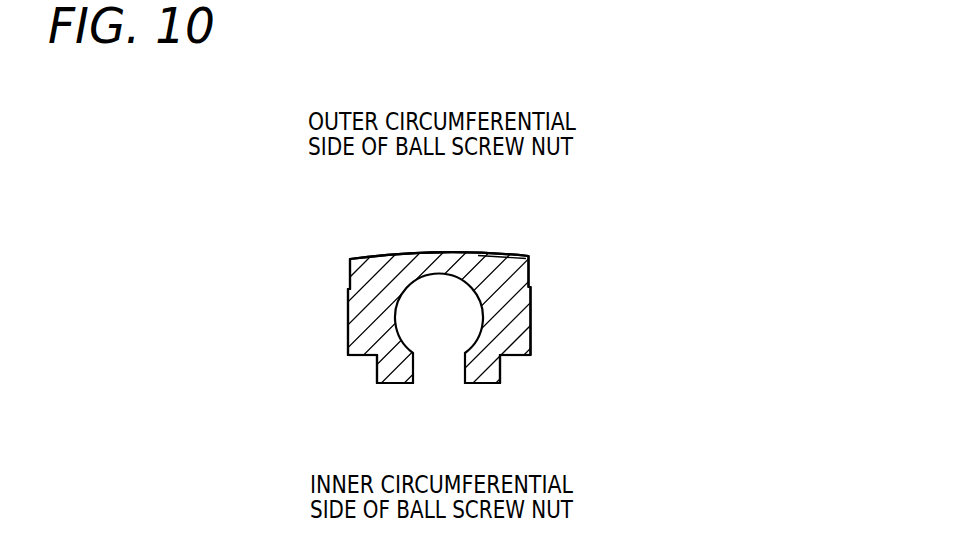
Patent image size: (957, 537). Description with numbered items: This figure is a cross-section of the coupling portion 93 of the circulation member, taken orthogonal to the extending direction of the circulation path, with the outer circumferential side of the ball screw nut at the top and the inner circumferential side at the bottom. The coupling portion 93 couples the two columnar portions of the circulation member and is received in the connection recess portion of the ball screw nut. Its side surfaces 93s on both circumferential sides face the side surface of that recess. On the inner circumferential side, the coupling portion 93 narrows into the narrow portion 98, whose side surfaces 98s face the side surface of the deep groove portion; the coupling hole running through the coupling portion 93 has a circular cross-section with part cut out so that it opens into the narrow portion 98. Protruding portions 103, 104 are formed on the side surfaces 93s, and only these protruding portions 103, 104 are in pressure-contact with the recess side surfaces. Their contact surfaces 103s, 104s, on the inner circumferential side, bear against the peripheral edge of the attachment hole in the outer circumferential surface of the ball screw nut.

The coupling portion 93 is at (405, 259).
The side surfaces of the coupling portion 93s is at (349, 266).
The protruding portion 103 is at (347, 300).
The contact surface of the protruding portion 103s is at (348, 338).
The protruding portion 104 is at (531, 305).
The contact surface of the protruding portion 104s is at (531, 332).
The narrow portion 98 is at (400, 381).
The side surfaces of the narrow portion 98s is at (377, 362).